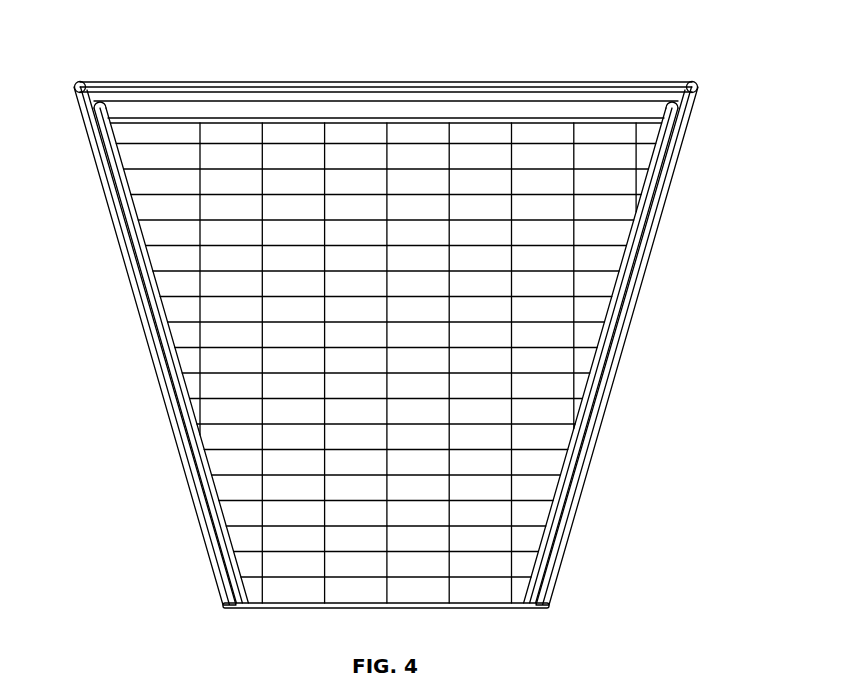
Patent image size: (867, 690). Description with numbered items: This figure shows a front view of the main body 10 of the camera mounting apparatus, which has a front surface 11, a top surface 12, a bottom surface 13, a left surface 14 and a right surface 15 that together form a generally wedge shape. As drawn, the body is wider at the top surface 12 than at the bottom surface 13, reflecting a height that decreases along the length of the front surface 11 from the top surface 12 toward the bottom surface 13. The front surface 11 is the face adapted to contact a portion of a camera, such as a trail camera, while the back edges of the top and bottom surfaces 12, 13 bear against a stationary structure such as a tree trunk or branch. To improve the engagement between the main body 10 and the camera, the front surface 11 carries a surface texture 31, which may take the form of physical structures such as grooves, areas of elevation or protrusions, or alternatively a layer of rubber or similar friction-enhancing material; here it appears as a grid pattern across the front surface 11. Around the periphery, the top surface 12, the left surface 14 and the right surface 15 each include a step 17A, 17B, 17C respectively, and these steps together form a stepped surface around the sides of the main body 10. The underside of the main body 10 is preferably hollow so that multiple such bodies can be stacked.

The main body 10 is at (691, 317).
The front surface 11 is at (500, 491).
The top surface 12 is at (462, 92).
The bottom surface 13 is at (433, 609).
The left surface 14 is at (150, 346).
The right surface 15 is at (593, 423).
The step 17A is at (570, 99).
The step 17B is at (100, 163).
The step 17C is at (660, 150).
The surface texture 31 is at (550, 262).